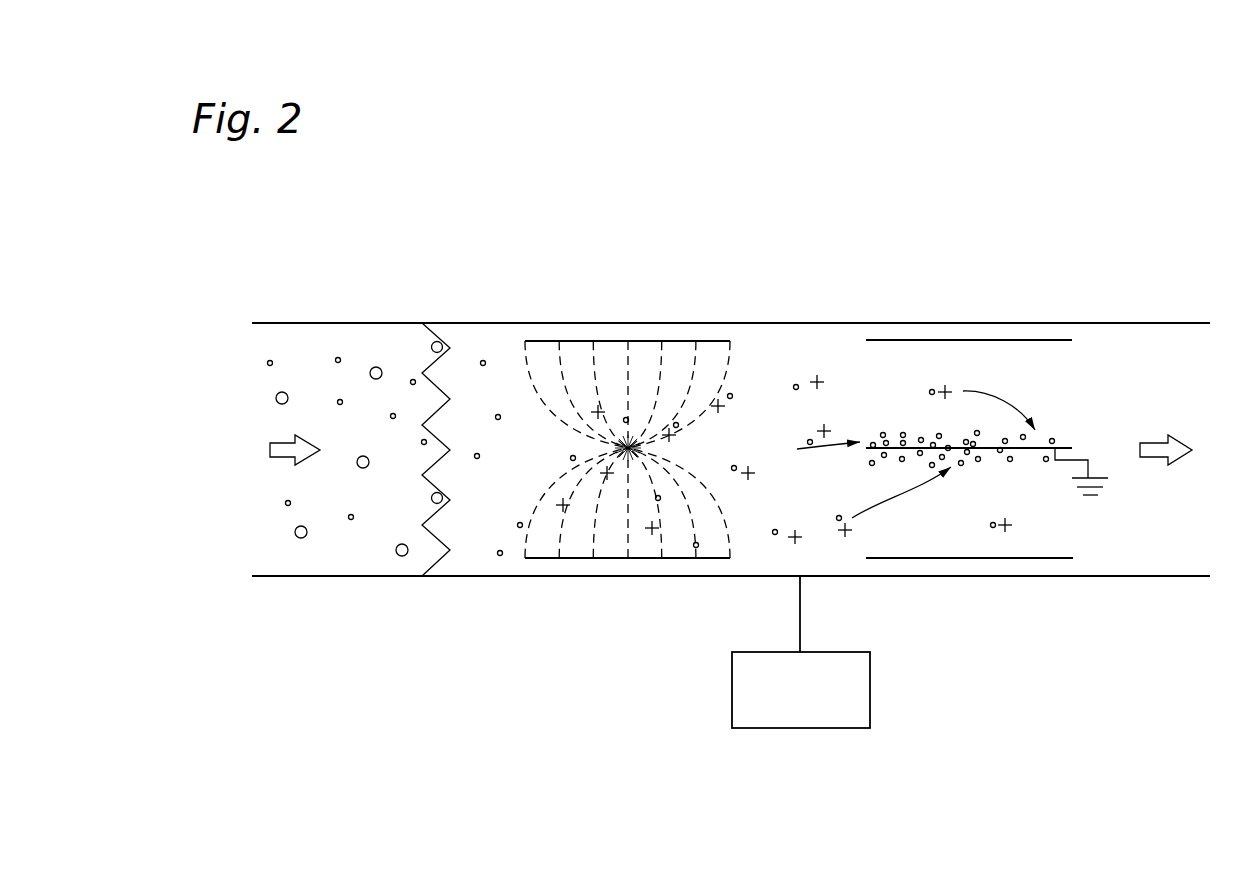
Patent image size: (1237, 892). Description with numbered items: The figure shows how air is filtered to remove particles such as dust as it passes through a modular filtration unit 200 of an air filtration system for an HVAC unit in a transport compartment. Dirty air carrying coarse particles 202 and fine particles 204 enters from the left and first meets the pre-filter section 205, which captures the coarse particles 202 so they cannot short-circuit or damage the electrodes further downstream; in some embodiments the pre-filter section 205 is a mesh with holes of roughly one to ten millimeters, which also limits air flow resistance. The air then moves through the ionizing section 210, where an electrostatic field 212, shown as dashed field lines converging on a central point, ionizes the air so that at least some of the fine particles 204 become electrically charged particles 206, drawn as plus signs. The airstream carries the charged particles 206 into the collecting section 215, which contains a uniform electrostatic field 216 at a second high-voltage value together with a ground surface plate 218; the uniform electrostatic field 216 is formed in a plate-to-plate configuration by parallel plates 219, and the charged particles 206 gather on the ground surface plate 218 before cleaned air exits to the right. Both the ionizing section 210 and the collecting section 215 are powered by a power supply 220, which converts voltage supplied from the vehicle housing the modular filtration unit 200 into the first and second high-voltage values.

The modular filtration unit 200 is at (1066, 234).
The coarse particles 202 is at (338, 357).
The fine particles 204 is at (375, 367).
The pre-filter section 205 is at (441, 342).
The charged particles 206 is at (736, 383).
The ionizing section 210 is at (655, 336).
The electrostatic field 212 is at (532, 372).
The collecting section 215 is at (925, 336).
The uniform electrostatic field 216 is at (1052, 386).
The ground surface plate 218 is at (1066, 447).
The parallel plates 219 is at (1047, 339).
The power supply 220 is at (843, 729).